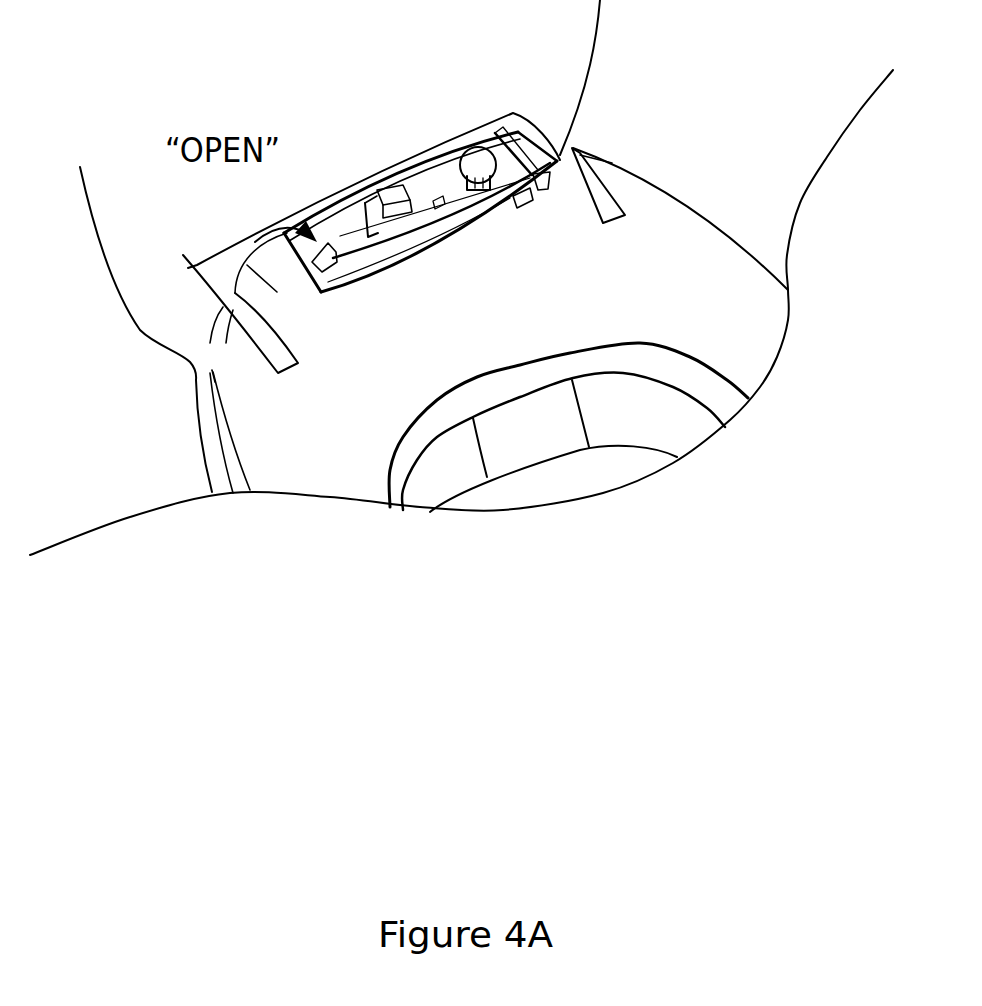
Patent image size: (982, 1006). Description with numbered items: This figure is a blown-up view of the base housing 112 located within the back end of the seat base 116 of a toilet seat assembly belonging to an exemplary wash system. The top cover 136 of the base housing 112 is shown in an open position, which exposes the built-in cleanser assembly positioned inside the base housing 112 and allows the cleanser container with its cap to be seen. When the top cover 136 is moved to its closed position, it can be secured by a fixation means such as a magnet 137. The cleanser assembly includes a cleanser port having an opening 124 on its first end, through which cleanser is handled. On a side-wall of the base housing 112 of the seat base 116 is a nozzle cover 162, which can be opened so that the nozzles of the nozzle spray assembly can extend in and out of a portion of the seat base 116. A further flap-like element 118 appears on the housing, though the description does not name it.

The base housing 112 is at (431, 182).
The seat base 116 is at (490, 342).
The left door flap 118 is at (297, 285).
The opening 124 is at (474, 163).
The top cover 136 is at (516, 190).
The magnet 137 is at (386, 192).
The nozzle cover 162 is at (550, 448).